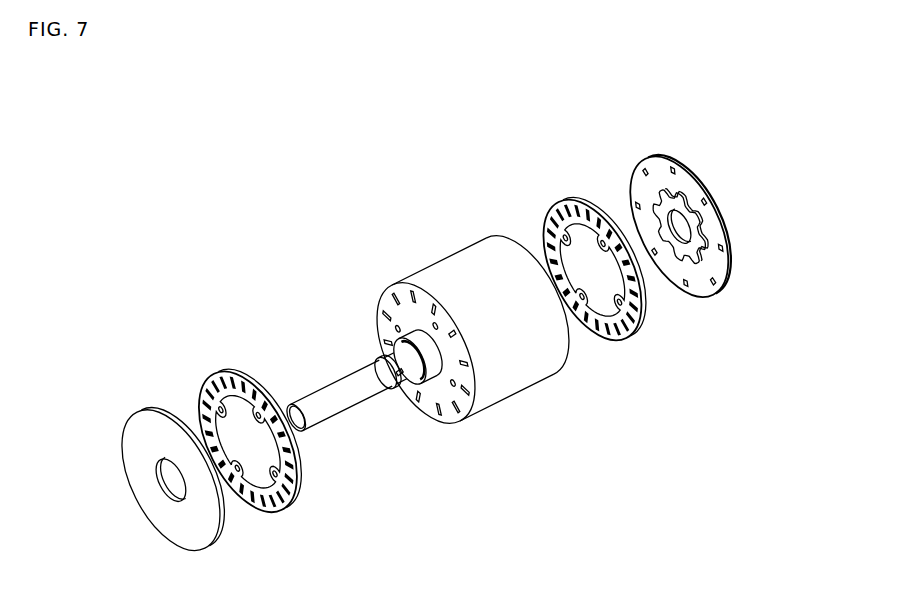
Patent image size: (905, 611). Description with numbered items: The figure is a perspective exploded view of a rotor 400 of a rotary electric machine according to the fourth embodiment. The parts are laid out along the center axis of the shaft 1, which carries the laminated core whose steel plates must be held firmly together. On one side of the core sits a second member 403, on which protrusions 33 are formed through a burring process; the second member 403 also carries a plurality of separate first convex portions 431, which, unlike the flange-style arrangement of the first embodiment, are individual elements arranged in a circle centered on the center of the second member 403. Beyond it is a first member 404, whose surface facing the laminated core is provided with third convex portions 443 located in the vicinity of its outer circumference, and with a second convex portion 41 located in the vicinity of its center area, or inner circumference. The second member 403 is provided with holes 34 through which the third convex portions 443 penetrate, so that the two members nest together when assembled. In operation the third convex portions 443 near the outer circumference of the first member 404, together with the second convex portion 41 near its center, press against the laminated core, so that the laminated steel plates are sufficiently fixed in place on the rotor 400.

The rotor 400 is at (251, 113).
The shaft 1 is at (343, 382).
The protrusions 33 is at (568, 320).
The holes 34 is at (592, 270).
The first convex portions 431 is at (543, 222).
The second member 403 is at (594, 269).
The first member 404 is at (622, 258).
The second convex portion 41 is at (680, 226).
The third convex portions 443 is at (717, 268).